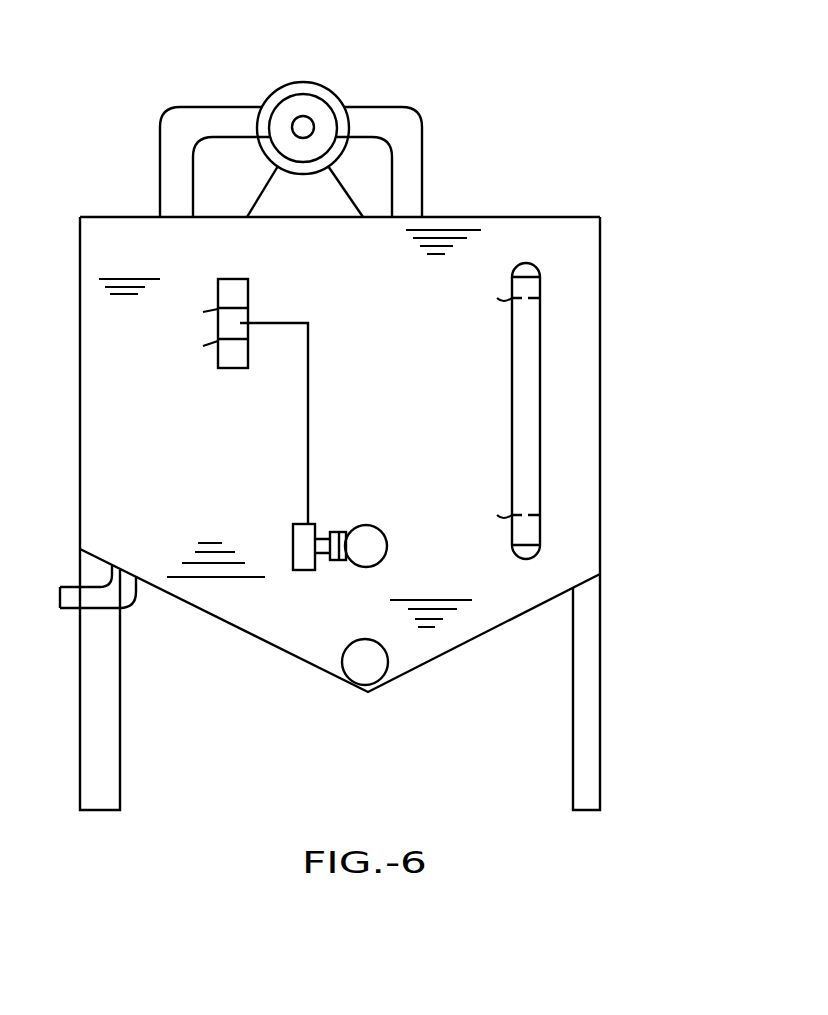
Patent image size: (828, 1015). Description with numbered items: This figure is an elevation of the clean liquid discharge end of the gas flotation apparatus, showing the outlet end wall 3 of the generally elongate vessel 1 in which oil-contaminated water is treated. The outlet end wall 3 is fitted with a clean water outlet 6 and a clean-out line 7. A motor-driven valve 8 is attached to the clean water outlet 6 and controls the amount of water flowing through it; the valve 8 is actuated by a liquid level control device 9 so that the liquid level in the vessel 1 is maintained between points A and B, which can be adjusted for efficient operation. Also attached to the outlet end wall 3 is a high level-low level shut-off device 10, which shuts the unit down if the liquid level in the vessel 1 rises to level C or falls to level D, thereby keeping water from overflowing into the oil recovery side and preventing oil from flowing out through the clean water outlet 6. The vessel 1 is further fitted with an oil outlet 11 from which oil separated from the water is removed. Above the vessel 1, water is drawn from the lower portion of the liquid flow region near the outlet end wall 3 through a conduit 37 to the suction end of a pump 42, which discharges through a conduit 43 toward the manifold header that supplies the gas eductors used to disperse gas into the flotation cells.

The vessel 1 is at (80, 312).
The outlet end wall 3 is at (402, 288).
The clean water outlet 6 is at (388, 552).
The clean-out line 7 is at (375, 677).
The motor-driven valve 8 is at (298, 523).
The liquid level control device 9 is at (226, 368).
The high level-low level shut-off device 10 is at (512, 452).
The oil outlet 11 is at (62, 600).
The conduit 37 is at (160, 172).
The pump 42 is at (298, 81).
The conduit 43 is at (422, 150).